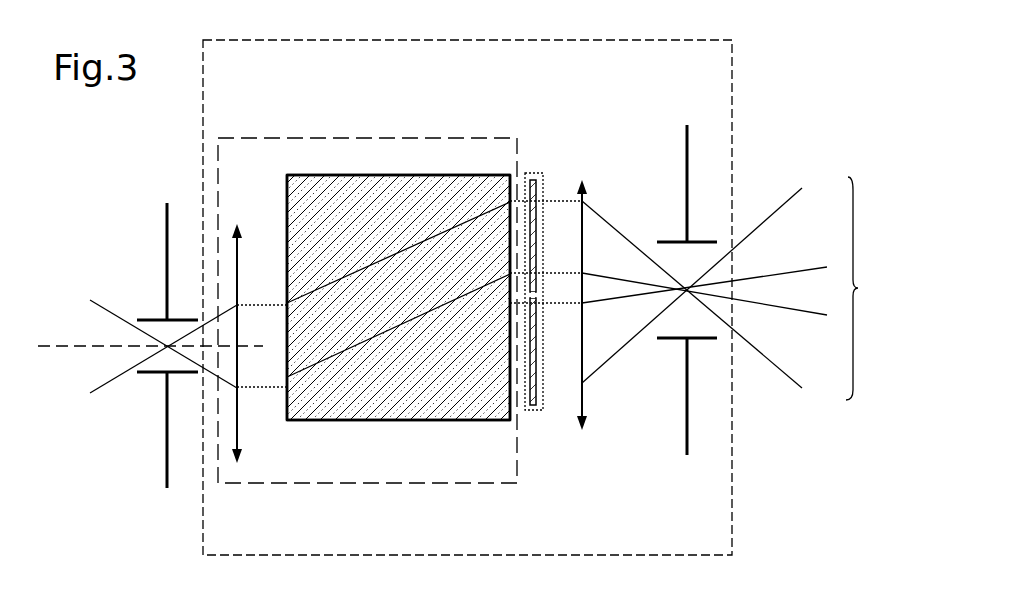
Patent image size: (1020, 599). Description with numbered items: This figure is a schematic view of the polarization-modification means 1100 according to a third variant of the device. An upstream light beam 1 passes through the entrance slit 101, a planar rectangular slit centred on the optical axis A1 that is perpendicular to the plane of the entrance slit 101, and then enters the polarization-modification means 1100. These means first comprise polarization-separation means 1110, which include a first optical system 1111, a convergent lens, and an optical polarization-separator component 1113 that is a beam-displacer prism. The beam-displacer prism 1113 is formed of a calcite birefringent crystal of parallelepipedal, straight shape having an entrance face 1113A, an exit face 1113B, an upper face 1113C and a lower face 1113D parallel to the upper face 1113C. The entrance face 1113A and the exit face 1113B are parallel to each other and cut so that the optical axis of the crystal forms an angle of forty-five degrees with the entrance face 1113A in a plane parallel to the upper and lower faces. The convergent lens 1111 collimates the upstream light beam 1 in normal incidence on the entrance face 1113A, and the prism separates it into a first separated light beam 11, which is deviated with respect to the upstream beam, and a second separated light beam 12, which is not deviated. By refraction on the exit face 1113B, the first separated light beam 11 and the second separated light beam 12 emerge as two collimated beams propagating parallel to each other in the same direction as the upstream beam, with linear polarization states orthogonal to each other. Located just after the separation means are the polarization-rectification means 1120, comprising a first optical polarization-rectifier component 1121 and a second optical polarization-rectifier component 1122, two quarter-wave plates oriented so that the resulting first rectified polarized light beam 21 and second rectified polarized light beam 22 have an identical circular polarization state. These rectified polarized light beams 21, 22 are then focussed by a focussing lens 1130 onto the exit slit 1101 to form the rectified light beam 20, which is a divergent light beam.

The upstream light beam 1 is at (212, 337).
The entrance slit 101 is at (167, 455).
The optical axis A1 is at (80, 346).
The polarization-modification means 1100 is at (746, 69).
The polarization-separation means 1110 is at (400, 130).
The first optical system 1111 is at (237, 430).
The optical polarization-separator component 1113 is at (425, 200).
The entrance face 1113A is at (287, 195).
The exit face 1113B is at (512, 410).
The upper face 1113C is at (362, 175).
The lower face 1113D is at (449, 420).
The first separated light beam 11 is at (474, 290).
The second separated light beam 12 is at (370, 305).
The polarization-rectification means 1120 is at (533, 162).
The first optical polarization-rectifier component 1121 is at (536, 218).
The second optical polarization-rectifier component 1122 is at (543, 378).
The focussing lens 1130 is at (583, 398).
The exit slit 1101 is at (687, 438).
The rectified light beam 20 is at (739, 288).
The first rectified polarized light beam 21 is at (780, 338).
The second rectified polarized light beam 22 is at (768, 245).